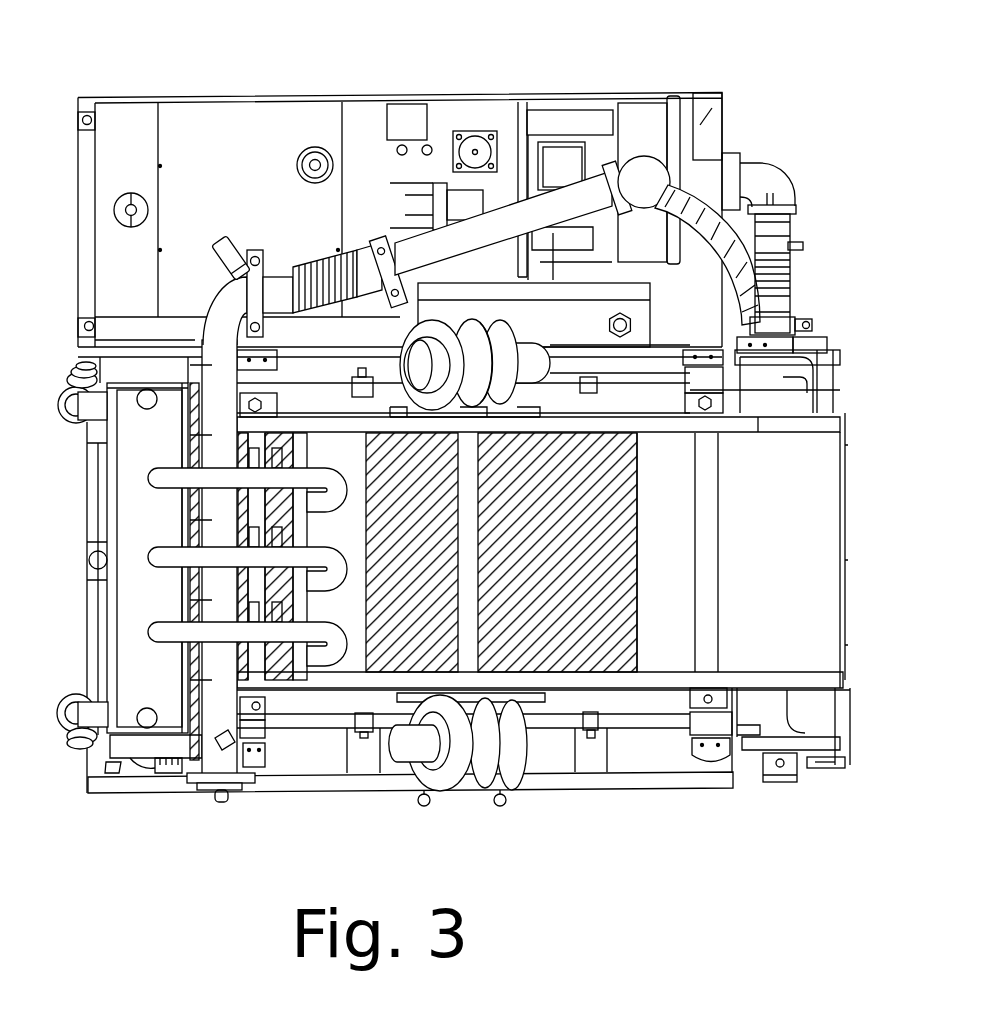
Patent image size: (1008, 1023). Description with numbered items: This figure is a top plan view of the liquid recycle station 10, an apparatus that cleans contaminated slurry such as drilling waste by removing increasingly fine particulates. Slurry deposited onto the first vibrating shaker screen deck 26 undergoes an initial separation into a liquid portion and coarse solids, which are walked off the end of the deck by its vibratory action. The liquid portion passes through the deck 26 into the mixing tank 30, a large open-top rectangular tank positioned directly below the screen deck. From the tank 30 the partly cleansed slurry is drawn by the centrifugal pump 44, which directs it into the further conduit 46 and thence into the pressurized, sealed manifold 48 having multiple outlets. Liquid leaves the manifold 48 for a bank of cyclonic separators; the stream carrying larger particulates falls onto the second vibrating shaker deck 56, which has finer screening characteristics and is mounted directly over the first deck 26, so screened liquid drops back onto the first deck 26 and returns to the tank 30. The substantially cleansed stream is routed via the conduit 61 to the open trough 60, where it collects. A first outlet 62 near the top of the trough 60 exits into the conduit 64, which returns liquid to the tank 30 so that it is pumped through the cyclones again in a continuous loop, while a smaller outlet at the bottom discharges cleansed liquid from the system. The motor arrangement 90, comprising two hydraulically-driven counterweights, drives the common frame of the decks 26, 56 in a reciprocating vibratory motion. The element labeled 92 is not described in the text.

The liquid recycle station 10 is at (233, 86).
The first vibrating shaker screen deck 26 is at (614, 501).
The mixing tank 30 is at (826, 556).
The centrifugal pump 44 is at (483, 782).
The further conduit 46 is at (497, 215).
The manifold 48 is at (210, 367).
The second vibrating shaker deck 56 is at (385, 658).
The open trough 60 is at (135, 603).
The conduit 61 is at (162, 482).
The first outlet 62 is at (90, 405).
The conduit 64 is at (150, 712).
The motor arrangement 90 is at (773, 783).
The fastener 92 is at (815, 772).